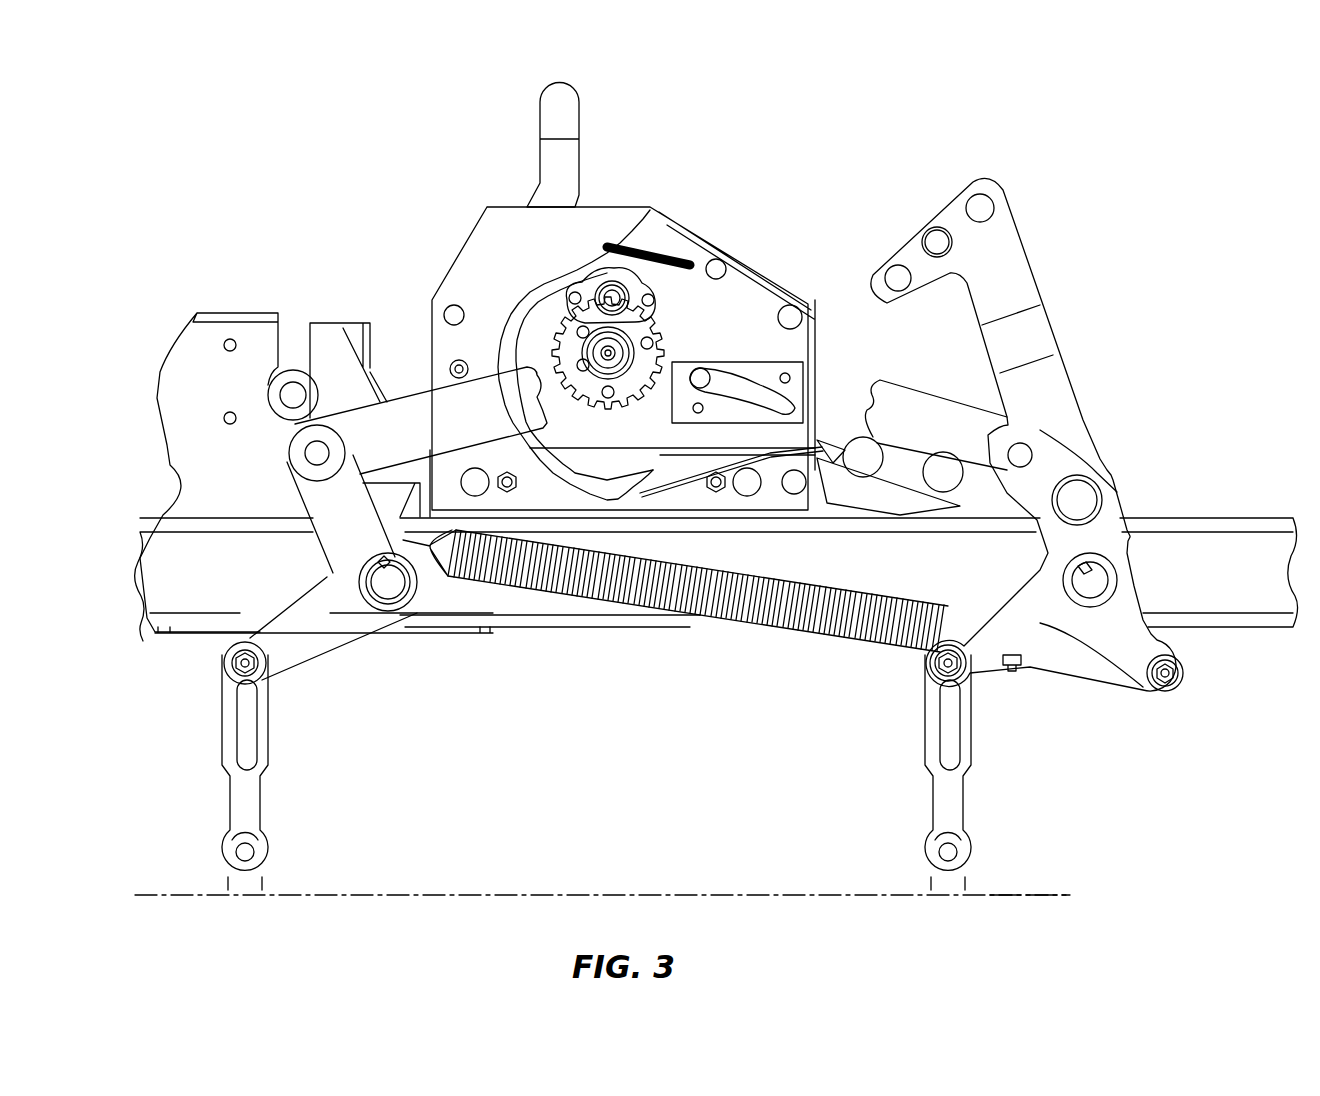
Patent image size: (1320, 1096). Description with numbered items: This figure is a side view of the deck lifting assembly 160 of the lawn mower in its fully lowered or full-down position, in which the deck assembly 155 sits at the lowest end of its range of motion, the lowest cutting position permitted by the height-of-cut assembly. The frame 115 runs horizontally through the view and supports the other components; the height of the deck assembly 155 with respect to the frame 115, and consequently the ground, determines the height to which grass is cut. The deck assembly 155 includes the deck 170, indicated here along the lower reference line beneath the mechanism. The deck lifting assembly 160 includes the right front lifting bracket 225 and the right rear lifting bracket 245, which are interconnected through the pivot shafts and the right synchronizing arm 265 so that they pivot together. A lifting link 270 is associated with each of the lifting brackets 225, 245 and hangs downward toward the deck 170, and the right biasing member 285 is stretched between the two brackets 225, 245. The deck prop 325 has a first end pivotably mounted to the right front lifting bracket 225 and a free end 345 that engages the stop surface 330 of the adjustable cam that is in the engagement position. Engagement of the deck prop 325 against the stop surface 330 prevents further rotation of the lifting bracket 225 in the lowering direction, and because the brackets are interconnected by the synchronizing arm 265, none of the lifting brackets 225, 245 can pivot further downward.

The frame 115 is at (1217, 553).
The deck assembly 155 is at (1013, 877).
The deck lifting assembly 160 is at (1097, 358).
The deck 170 is at (595, 893).
The right front lifting bracket 225 is at (1040, 620).
The right rear lifting bracket 245 is at (327, 630).
The right synchronizing arm 265 is at (937, 410).
The lifting link 270 is at (240, 805).
The right biasing member 285 is at (573, 593).
The deck prop 325 is at (830, 403).
The stop surface 330 is at (662, 310).
The free end 345 is at (662, 310).